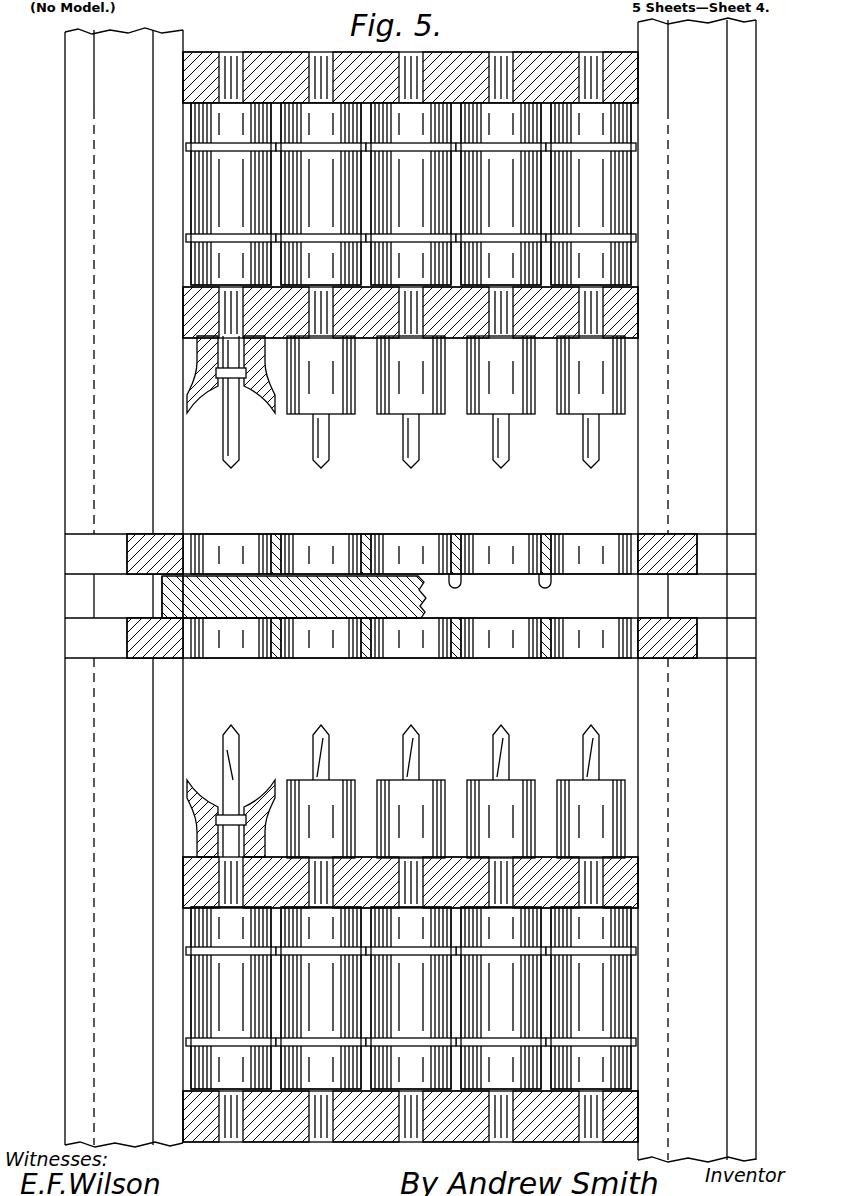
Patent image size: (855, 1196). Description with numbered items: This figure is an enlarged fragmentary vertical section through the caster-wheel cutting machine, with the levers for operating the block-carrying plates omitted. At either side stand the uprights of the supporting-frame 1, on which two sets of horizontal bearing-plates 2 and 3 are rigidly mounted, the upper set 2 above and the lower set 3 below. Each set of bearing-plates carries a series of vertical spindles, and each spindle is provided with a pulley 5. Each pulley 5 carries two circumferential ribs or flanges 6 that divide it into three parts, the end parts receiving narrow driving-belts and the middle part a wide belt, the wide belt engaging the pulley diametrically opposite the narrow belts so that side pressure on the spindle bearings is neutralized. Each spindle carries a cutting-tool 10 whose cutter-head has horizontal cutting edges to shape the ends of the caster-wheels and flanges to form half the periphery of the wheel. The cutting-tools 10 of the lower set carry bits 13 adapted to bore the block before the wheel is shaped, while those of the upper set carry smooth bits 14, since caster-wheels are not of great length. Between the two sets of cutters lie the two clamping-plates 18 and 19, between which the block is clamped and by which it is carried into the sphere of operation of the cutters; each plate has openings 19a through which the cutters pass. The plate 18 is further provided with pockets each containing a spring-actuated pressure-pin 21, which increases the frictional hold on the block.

The supporting-frame 1 is at (76, 278).
The bearing-plate 2 is at (279, 56).
The bearing-plate 3 is at (185, 880).
The pulley 5 is at (510, 126).
The circumferential rib 6 is at (318, 957).
The cutting-tool 10 is at (200, 418).
The bit 13 is at (243, 733).
The smooth bit 14 is at (238, 463).
The clamping-plate 18 is at (456, 536).
The clamping-plate 19 is at (456, 660).
The opening 19a is at (328, 546).
The pressure-pin 21 is at (458, 582).